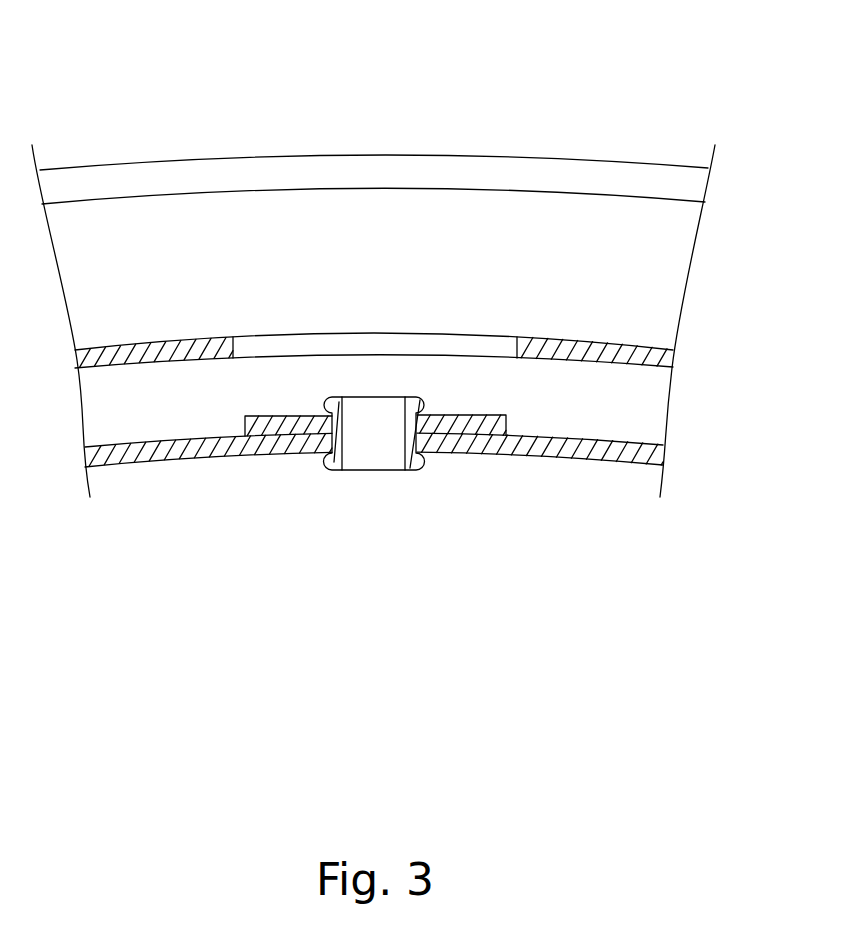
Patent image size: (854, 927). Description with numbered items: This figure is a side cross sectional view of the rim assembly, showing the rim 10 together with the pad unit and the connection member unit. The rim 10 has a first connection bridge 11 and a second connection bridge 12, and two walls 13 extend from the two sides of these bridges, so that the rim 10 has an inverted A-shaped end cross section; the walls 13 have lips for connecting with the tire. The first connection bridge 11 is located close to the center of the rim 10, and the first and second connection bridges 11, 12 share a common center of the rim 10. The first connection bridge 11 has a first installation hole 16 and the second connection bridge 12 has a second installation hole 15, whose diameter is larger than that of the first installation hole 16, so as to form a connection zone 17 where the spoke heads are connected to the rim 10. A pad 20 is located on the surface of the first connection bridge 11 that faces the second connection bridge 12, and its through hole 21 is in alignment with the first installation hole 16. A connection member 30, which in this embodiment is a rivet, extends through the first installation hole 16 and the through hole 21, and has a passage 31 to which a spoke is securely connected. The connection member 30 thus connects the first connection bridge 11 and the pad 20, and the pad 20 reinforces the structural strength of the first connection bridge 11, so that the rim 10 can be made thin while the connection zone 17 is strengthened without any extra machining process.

The rim 10 is at (617, 703).
The first connection bridge 11 is at (605, 455).
The second connection bridge 12 is at (630, 350).
The wall 13 is at (632, 177).
The second installation hole 15 is at (282, 345).
The first installation hole 16 is at (412, 440).
The connection zone 17 is at (436, 483).
The pad 20 is at (252, 455).
The through hole 21 is at (413, 422).
The connection member 30 is at (346, 519).
The passage 31 is at (367, 453).